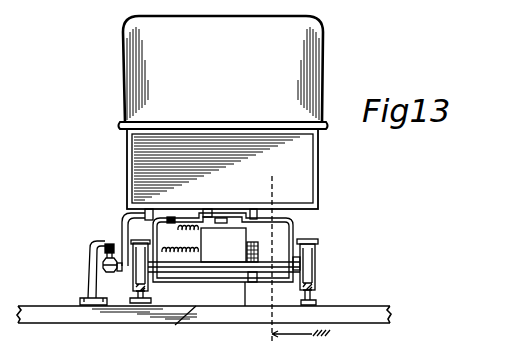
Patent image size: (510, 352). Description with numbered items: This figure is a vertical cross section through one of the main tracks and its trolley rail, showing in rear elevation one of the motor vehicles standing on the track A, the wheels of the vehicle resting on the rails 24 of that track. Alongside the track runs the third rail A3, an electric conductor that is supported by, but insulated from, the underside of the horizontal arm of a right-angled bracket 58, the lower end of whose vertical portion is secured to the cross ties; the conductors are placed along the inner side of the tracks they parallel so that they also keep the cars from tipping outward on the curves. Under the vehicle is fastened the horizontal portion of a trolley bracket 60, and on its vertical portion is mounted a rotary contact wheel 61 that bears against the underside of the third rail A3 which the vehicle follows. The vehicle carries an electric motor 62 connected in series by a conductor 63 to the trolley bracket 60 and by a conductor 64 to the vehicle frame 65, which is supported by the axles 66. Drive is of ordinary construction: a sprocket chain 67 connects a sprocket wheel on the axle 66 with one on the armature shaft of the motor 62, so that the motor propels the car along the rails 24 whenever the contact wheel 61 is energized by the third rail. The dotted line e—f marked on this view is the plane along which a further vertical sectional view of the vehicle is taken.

The cylinder support 24 is at (148, 280).
The right-angled bracket 58 is at (88, 257).
The trolley bracket 60 is at (122, 216).
The rotary contact wheel 61 is at (103, 268).
The motor 62 is at (223, 245).
The conductor 63 is at (197, 214).
The conductor 64 is at (192, 255).
The vehicle frame 65 is at (293, 226).
The axle 66 is at (204, 303).
The sprocket chain 67 is at (258, 247).
The track A is at (140, 303).
The third rail A3 is at (108, 244).
The dotted line e—f e is at (269, 248).
The dotted line e— f is at (293, 338).